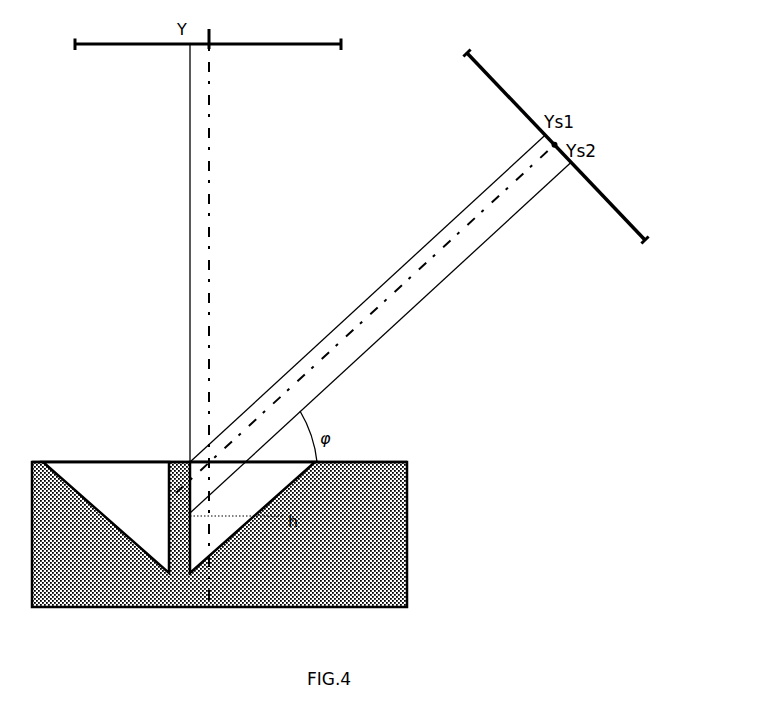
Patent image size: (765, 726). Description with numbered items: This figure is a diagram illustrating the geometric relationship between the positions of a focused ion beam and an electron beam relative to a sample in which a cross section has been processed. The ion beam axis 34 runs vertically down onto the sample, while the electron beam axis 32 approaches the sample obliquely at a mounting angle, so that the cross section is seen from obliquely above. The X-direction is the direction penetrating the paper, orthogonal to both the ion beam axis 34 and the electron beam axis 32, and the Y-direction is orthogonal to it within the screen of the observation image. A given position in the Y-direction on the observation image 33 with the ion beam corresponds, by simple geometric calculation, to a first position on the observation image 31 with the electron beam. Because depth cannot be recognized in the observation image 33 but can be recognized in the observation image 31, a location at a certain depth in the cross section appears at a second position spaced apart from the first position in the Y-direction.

The observation image with the electron beam 31 is at (489, 74).
The electron beam axis 32 is at (377, 304).
The observation image with the ion beam 33 is at (268, 43).
The ion beam axis 34 is at (209, 225).